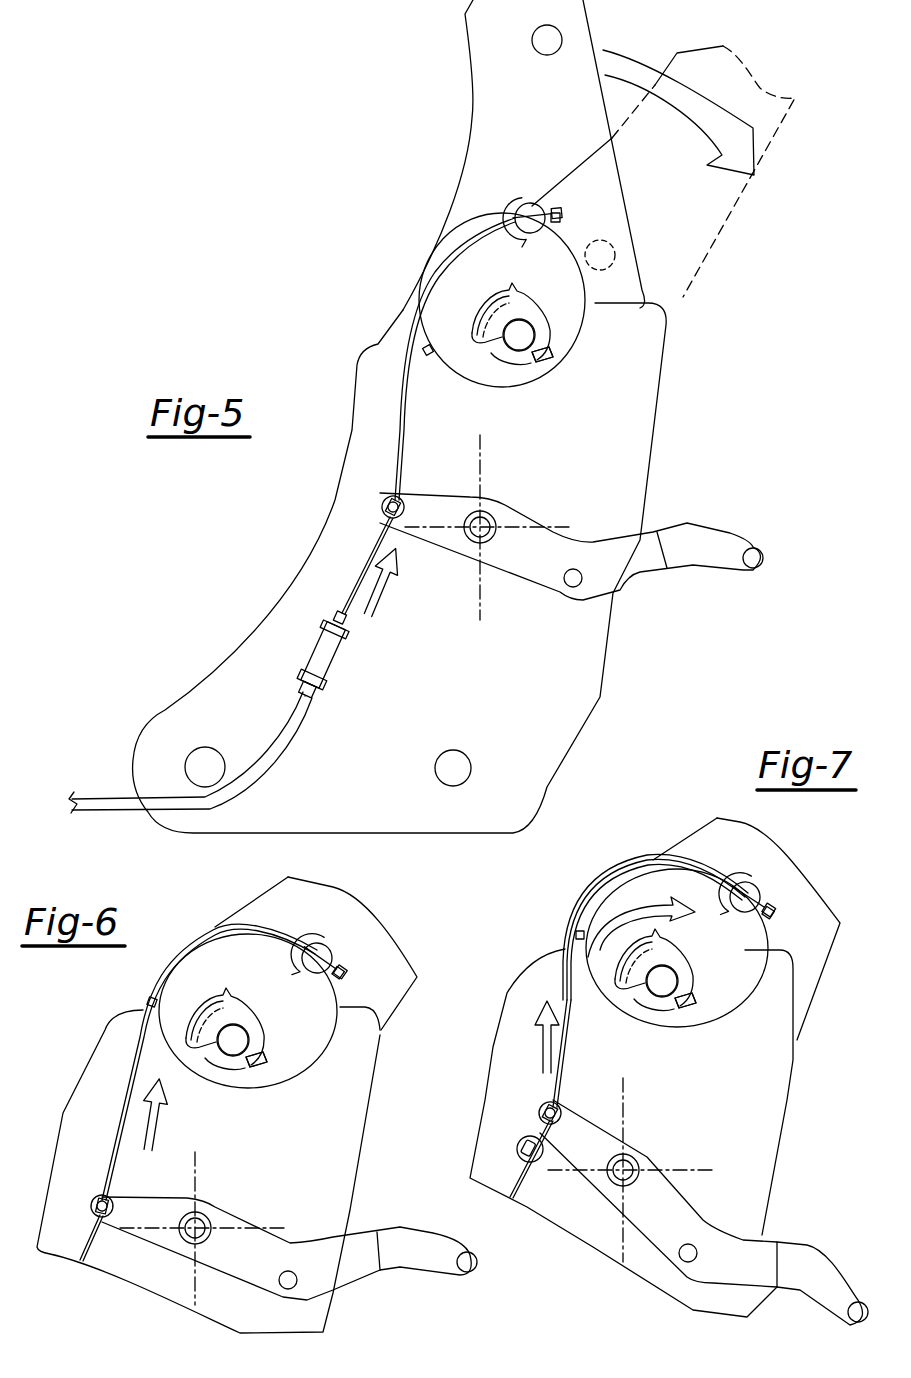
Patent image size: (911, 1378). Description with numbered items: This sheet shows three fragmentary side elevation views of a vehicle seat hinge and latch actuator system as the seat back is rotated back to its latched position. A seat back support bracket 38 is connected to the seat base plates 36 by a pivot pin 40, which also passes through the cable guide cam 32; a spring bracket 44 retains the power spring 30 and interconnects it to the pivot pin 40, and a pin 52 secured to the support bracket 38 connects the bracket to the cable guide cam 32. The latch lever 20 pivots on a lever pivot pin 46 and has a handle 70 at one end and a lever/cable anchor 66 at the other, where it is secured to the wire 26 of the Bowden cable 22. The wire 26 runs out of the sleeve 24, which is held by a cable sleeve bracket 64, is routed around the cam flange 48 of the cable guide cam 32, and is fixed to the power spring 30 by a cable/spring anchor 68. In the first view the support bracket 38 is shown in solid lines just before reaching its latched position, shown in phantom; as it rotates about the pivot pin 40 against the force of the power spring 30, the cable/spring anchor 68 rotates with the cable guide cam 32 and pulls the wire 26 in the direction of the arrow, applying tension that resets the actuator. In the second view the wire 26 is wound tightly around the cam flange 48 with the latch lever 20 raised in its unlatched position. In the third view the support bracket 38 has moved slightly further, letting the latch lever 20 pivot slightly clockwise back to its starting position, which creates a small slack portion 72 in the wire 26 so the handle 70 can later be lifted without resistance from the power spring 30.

In FIG. 5, the latch lever 20 is at (612, 543).
In FIG. 6, the latch lever 20 is at (340, 1250).
In FIG. 7, the latch lever 20 is at (752, 1243).
In FIG. 5, the Bowden cable 22 is at (264, 750).
In FIG. 5, the sleeve 24 is at (265, 768).
In FIG. 5, the wire 26 is at (405, 425).
In FIG. 6, the wire 26 is at (110, 1108).
In FIG. 7, the wire 26 is at (568, 1070).
In FIG. 5, the power spring 30 is at (473, 320).
In FIG. 6, the power spring 30 is at (197, 1010).
In FIG. 7, the power spring 30 is at (603, 967).
In FIG. 5, the cable guide cam 32 is at (568, 303).
In FIG. 6, the cable guide cam 32 is at (335, 990).
In FIG. 7, the cable guide cam 32 is at (765, 945).
In FIG. 5, the seat base plates 36 is at (307, 598).
In FIG. 6, the seat base plates 36 is at (90, 1060).
In FIG. 7, the seat base plates 36 is at (527, 997).
In FIG. 5, the seat back support bracket 38 is at (480, 100).
In FIG. 6, the seat back support bracket 38 is at (260, 903).
In FIG. 7, the seat back support bracket 38 is at (697, 845).
In FIG. 5, the pivot pin 40 is at (530, 330).
In FIG. 6, the pivot pin 40 is at (247, 1045).
In FIG. 7, the pivot pin 40 is at (685, 985).
In FIG. 5, the spring bracket 44 is at (537, 365).
In FIG. 6, the spring bracket 44 is at (243, 1068).
In FIG. 7, the spring bracket 44 is at (680, 1010).
In FIG. 5, the lever pivot pin 46 is at (488, 525).
In FIG. 6, the lever pivot pin 46 is at (208, 1222).
In FIG. 7, the lever pivot pin 46 is at (633, 1165).
In FIG. 5, the cam flange 48 is at (428, 352).
In FIG. 6, the cam flange 48 is at (150, 1003).
In FIG. 7, the cam flange 48 is at (580, 937).
In FIG. 5, the pin 52 is at (530, 208).
In FIG. 6, the pin 52 is at (312, 945).
In FIG. 7, the pin 52 is at (752, 885).
In FIG. 5, the cable sleeve bracket 64 is at (355, 655).
In FIG. 5, the lever/cable anchor 66 is at (392, 495).
In FIG. 6, the lever/cable anchor 66 is at (100, 1195).
In FIG. 7, the lever/cable anchor 66 is at (545, 1105).
In FIG. 5, the cable/spring anchor 68 is at (561, 218).
In FIG. 6, the cable/spring anchor 68 is at (340, 970).
In FIG. 7, the cable/spring anchor 68 is at (770, 907).
In FIG. 5, the handle 70 is at (735, 548).
In FIG. 6, the handle 70 is at (432, 1245).
In FIG. 7, the handle 70 is at (810, 1265).
In FIG. 7, the slack portion 72 is at (587, 893).